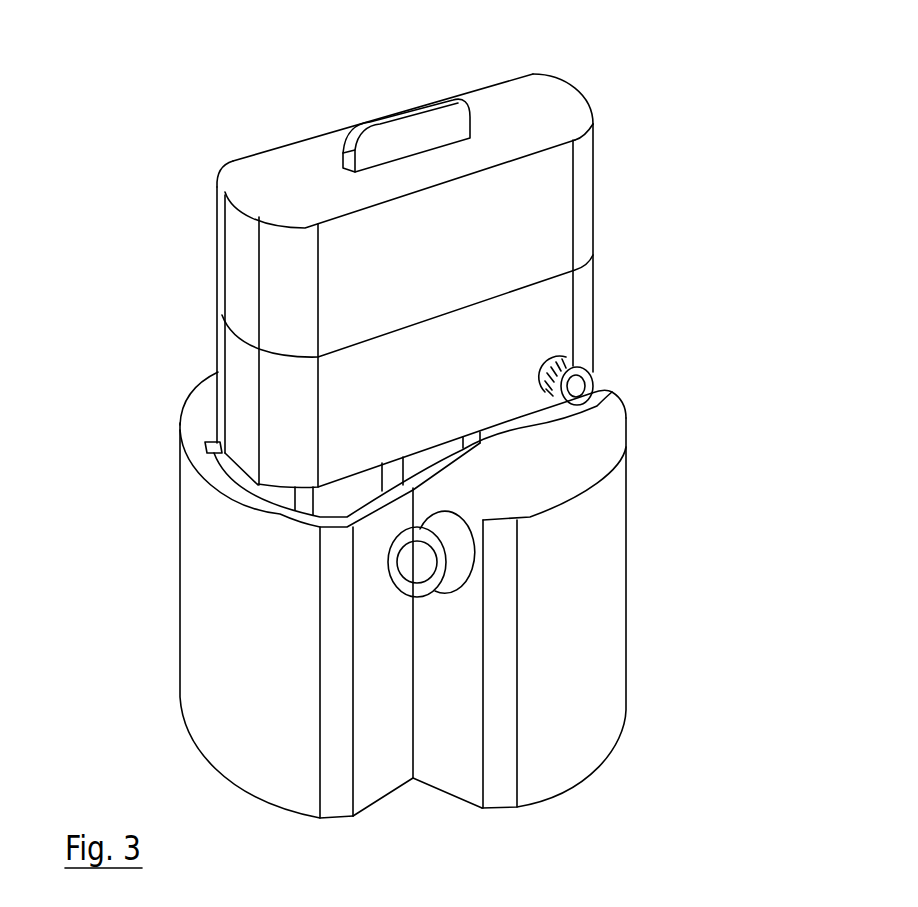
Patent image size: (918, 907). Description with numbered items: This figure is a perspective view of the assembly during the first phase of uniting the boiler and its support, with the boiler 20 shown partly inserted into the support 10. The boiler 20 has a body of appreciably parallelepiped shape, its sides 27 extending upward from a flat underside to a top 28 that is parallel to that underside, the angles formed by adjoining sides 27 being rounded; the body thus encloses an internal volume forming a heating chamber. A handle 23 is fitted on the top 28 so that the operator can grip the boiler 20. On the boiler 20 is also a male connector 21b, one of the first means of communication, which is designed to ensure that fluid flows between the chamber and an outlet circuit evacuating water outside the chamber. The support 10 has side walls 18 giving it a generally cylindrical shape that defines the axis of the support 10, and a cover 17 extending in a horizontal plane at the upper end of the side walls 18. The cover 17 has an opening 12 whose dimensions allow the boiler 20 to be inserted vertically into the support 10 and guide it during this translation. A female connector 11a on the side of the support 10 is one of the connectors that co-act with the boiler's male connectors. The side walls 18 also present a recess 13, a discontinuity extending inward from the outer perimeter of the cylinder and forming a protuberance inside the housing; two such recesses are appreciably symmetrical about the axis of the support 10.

The support 10 is at (158, 602).
The female connector 11a is at (453, 562).
The opening 12 is at (286, 486).
The recess 13 is at (420, 803).
The cover 17 is at (600, 442).
The side walls 18 is at (203, 676).
The boiler 20 is at (484, 247).
The male connector 21b is at (583, 360).
The handle 23 is at (415, 130).
The sides 27 is at (533, 240).
The top 28 is at (553, 82).